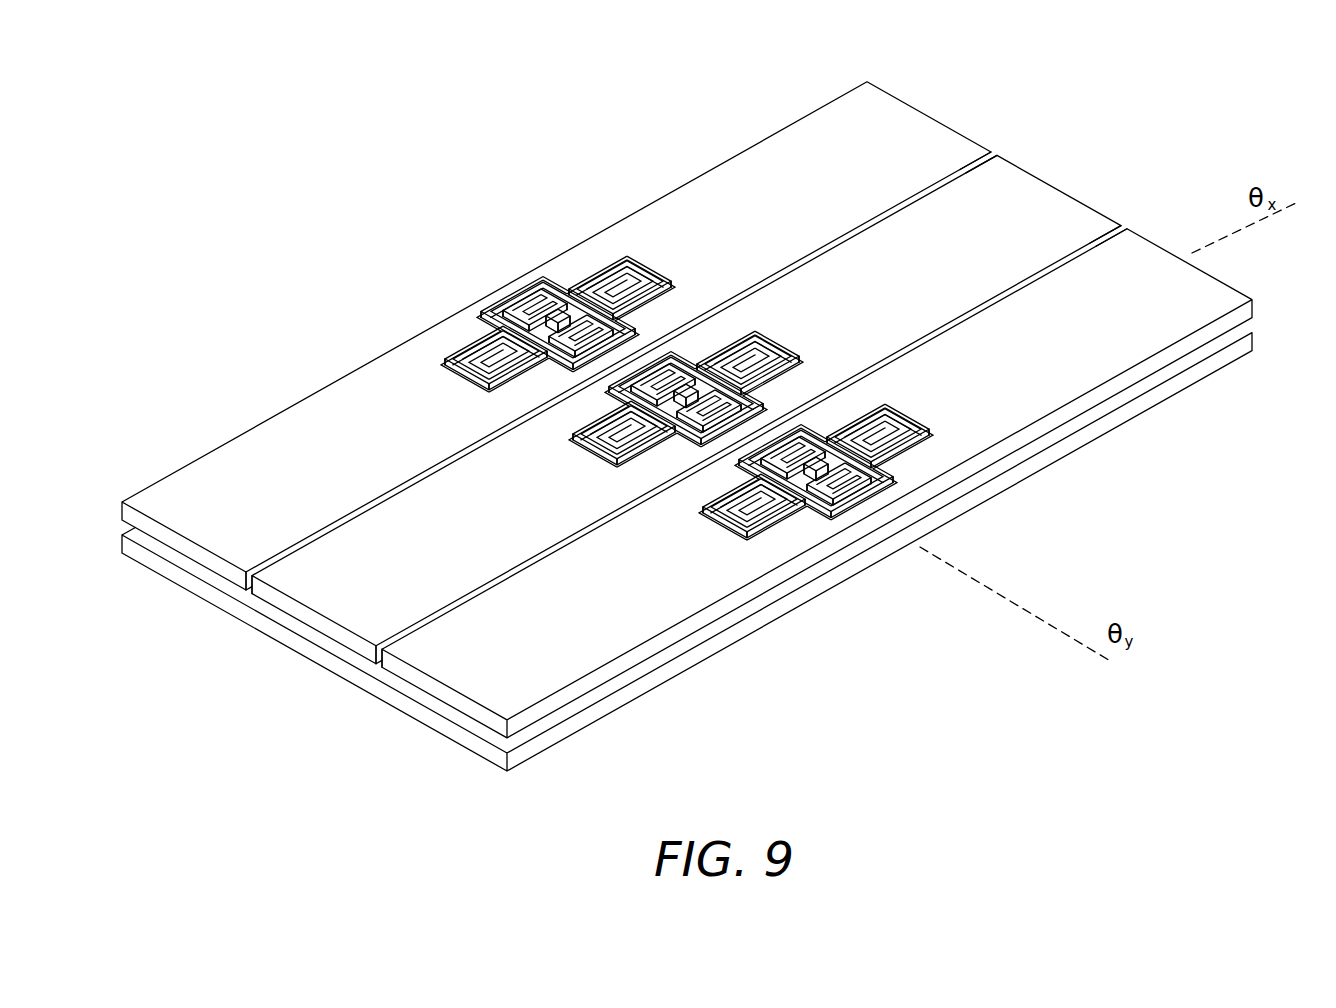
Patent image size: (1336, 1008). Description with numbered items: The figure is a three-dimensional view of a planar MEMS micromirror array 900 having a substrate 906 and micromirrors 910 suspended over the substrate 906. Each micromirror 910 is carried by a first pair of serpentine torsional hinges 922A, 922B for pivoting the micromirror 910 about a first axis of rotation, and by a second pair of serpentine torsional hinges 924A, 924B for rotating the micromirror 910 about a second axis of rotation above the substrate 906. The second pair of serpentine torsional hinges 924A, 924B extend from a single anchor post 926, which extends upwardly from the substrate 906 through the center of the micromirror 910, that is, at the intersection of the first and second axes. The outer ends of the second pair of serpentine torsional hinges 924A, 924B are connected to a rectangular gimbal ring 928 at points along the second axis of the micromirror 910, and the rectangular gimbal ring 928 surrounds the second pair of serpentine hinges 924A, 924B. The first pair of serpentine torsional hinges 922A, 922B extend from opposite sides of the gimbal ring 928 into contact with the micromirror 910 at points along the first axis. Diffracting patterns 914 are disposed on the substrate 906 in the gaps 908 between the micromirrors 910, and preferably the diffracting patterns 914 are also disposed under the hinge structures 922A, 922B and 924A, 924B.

The planar MEMS micromirror array 900 is at (352, 125).
The substrate 906 is at (458, 735).
The gaps 908 is at (1000, 140).
The micromirrors 910 is at (218, 509).
The diffracting patterns 914 is at (370, 672).
The serpentine torsional hinge 922A is at (742, 510).
The serpentine torsional hinge 922B is at (857, 437).
The serpentine torsional hinge 924A is at (822, 490).
The serpentine torsional hinge 924B is at (782, 462).
The anchor post 926 is at (817, 470).
The rectangular gimbal ring 928 is at (845, 496).